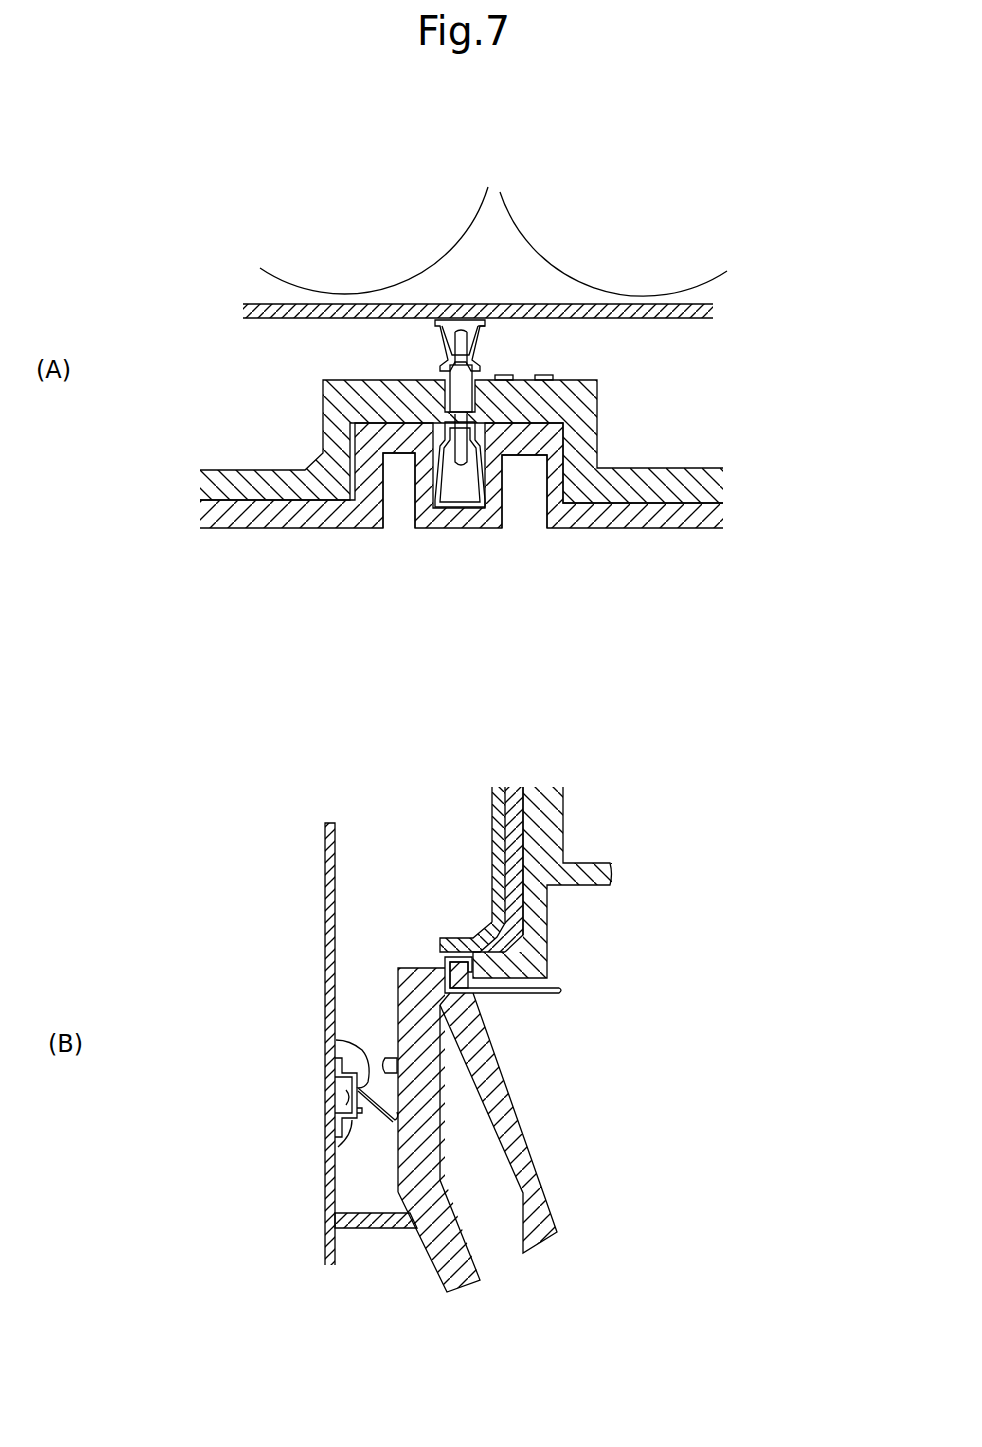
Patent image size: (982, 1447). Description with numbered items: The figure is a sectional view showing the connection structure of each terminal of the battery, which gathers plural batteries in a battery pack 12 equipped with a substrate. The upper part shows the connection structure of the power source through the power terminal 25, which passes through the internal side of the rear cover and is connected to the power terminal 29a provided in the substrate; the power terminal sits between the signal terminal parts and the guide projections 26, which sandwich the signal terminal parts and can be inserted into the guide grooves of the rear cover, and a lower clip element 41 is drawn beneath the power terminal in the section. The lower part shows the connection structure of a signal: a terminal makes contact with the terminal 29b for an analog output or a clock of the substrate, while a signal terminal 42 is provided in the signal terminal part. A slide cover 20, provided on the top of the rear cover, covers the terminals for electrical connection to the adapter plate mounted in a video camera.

The battery pack 12 is at (395, 188).
The slide cover 20 is at (492, 812).
The power terminal 25 is at (443, 337).
The guide projection 26 is at (398, 483).
The power terminal 29a is at (483, 333).
The terminal for an analog output or a clock 29b is at (330, 1135).
The lower clip 41 is at (462, 510).
The signal terminal 42 is at (560, 995).